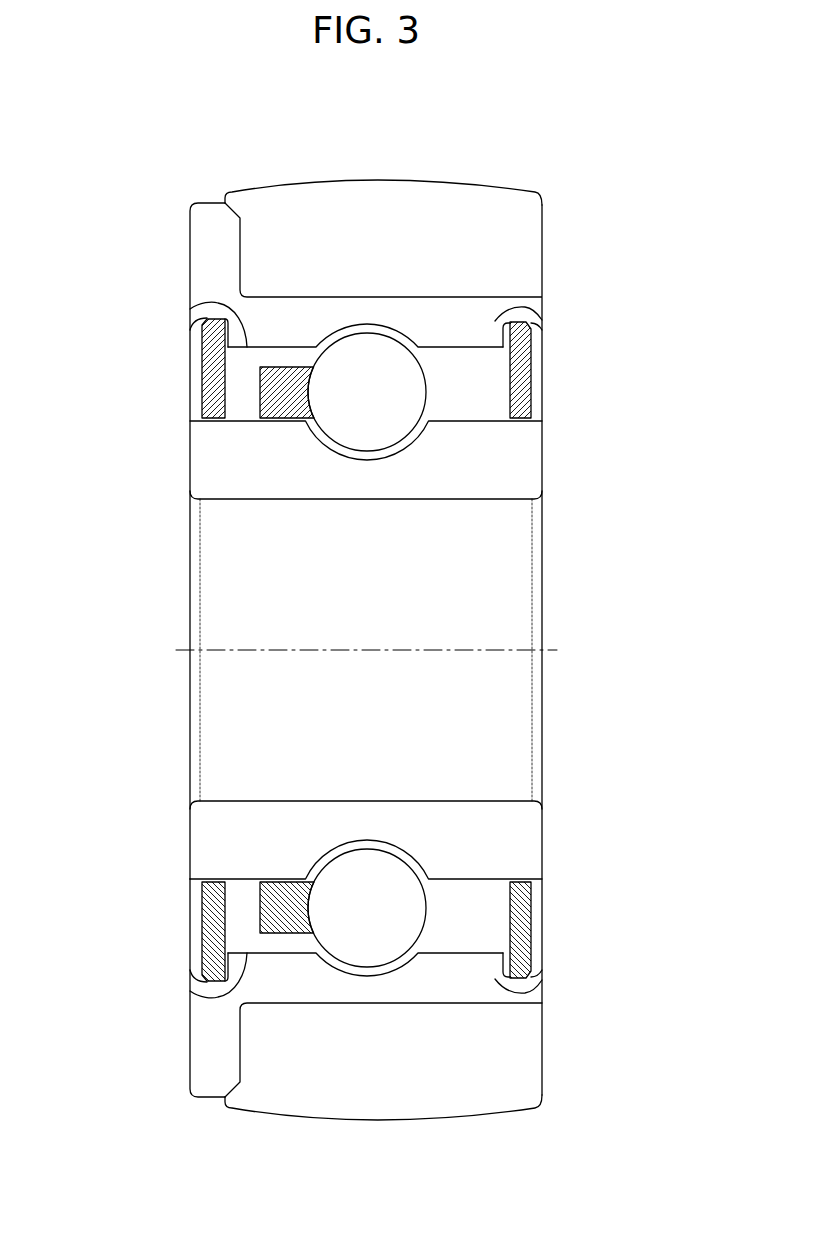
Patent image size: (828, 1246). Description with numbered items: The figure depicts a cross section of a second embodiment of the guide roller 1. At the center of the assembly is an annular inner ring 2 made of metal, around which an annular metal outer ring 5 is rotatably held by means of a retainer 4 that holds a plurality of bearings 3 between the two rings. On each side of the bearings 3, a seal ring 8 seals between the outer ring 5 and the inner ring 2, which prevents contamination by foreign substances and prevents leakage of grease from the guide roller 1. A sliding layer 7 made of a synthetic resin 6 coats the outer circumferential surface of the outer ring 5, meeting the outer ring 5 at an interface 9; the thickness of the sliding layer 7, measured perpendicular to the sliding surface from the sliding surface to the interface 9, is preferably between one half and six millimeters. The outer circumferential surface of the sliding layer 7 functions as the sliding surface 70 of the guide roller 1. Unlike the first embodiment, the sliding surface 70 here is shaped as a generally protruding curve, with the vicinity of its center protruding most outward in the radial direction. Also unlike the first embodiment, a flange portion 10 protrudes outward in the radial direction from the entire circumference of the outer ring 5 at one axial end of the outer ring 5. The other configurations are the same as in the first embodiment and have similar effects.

The guide roller 1 is at (568, 110).
The inner ring 2 is at (527, 461).
The bearings 3 is at (365, 423).
The retainer 4 is at (292, 400).
The outer ring 5 is at (542, 307).
The synthetic resin 6 is at (429, 650).
The sliding layer 7 is at (528, 238).
The seal ring 8 is at (210, 373).
The interface 9 is at (190, 309).
The flange portion 10 is at (211, 239).
The sliding surface 70 is at (372, 180).